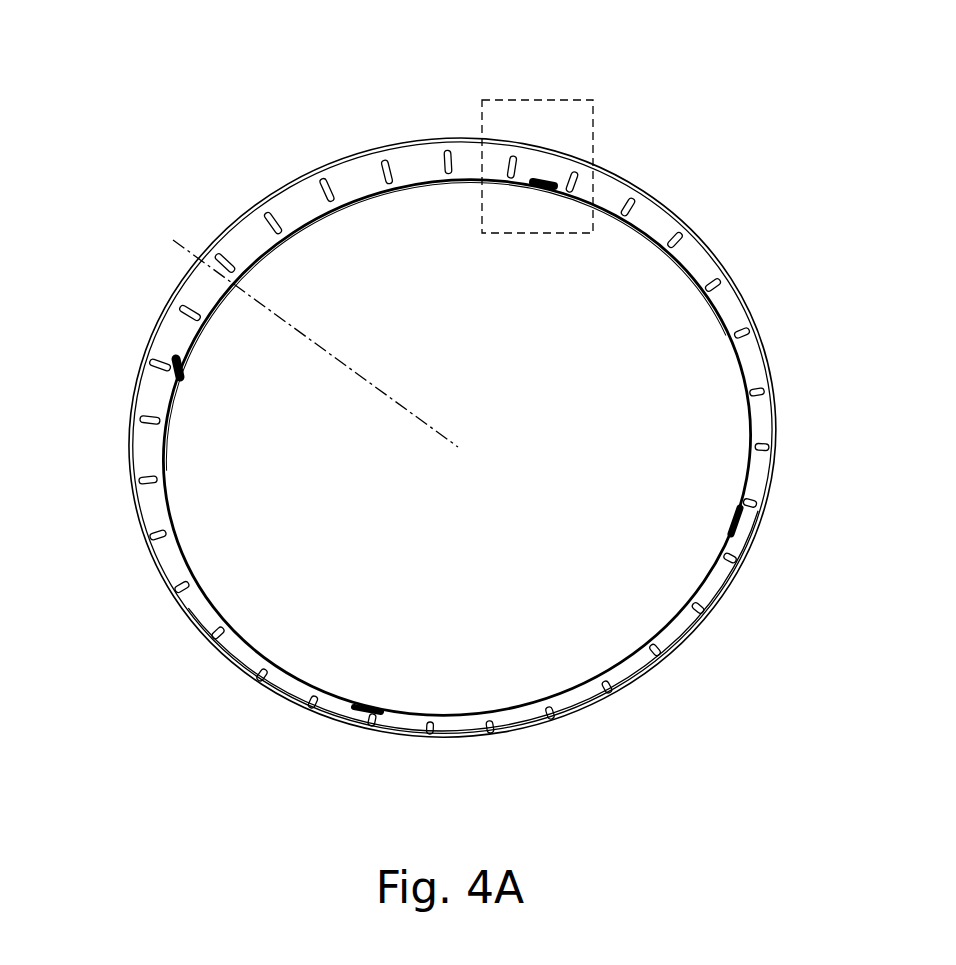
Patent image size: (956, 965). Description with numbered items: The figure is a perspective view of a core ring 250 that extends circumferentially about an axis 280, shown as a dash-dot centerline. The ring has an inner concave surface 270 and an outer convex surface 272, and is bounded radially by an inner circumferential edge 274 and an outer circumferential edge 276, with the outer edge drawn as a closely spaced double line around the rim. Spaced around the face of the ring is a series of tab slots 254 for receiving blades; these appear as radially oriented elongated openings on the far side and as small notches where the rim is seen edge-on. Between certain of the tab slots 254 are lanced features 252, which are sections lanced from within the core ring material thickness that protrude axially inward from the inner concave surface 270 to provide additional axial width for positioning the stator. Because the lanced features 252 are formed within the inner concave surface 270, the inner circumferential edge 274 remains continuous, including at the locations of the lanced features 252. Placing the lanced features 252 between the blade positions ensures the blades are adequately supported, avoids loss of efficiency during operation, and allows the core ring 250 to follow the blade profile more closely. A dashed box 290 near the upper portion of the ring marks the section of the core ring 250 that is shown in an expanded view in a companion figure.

The core ring 250 is at (186, 203).
The lanced feature 252 is at (538, 194).
The tab slot 254 is at (705, 300).
The inner concave surface 270 is at (157, 398).
The outer convex surface 272 is at (707, 662).
The inner circumferential edge 274 is at (165, 462).
The outer circumferential edge 276 is at (712, 243).
The axis 280 is at (362, 370).
The box 290 is at (540, 100).